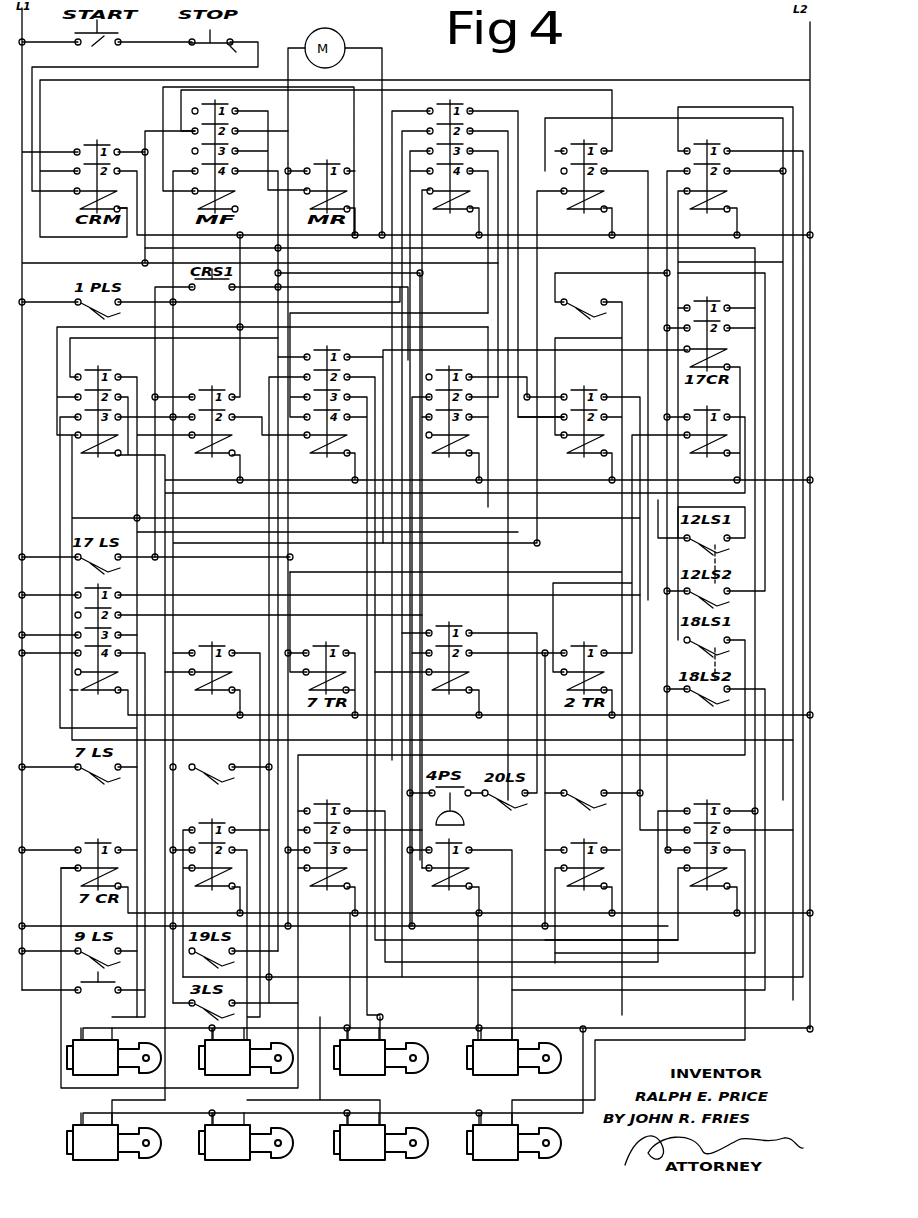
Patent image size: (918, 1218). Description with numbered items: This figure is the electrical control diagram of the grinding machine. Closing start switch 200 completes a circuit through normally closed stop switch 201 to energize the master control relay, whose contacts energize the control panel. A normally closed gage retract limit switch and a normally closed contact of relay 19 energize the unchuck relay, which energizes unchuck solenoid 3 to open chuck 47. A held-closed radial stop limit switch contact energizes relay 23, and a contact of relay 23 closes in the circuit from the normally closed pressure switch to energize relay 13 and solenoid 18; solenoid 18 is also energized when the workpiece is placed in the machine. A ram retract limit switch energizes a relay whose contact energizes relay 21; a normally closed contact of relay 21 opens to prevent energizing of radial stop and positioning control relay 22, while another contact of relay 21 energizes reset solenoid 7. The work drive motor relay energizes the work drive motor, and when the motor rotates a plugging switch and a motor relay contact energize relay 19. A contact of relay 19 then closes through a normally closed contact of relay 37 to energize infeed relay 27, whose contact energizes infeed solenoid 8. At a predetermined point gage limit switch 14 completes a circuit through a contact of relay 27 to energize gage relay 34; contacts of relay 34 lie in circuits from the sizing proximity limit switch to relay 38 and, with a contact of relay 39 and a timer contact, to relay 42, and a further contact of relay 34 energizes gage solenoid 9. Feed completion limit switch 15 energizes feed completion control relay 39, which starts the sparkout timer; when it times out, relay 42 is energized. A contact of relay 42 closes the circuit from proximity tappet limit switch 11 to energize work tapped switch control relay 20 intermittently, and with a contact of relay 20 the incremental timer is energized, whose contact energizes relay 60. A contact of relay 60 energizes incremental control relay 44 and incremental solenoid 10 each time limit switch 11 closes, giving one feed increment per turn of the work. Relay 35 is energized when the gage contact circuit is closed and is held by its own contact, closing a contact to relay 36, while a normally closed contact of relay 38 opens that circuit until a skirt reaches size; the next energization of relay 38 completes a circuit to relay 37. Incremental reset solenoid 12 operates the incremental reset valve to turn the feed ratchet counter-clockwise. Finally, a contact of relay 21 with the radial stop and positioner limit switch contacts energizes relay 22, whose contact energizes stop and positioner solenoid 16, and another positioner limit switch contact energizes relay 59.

The start switch 200 is at (98, 42).
The stop switch 201 is at (212, 47).
The relay 19 is at (450, 163).
The work tapped switch control relay 20 is at (584, 183).
The relay 23 is at (707, 183).
The relay 35 is at (98, 419).
The relay 36 is at (212, 429).
The relay 37 is at (327, 409).
The relay 38 is at (449, 419).
The feed completion control relay 39 is at (584, 429).
The relay 60 is at (707, 439).
The gage relay 34 is at (98, 647).
The incremental control relay 44 is at (211, 676).
The relay 42 is at (448, 666).
The relay 13 is at (212, 862).
The relay 21 is at (327, 853).
The radial stop and positioning control relay 22 is at (449, 872).
The relay 59 is at (584, 872).
The infeed relay 27 is at (707, 853).
The feed completion limit switch 15 is at (583, 299).
The proximity tappet limit switch 11 is at (212, 764).
The gage limit switch 14 is at (584, 790).
The chuck 47 is at (99, 978).
The unchuck solenoid 3 is at (114, 1051).
The solenoid 18 is at (246, 1051).
The reset solenoid 7 is at (381, 1051).
The stop and positioner solenoid 16 is at (514, 1051).
The gage solenoid 9 is at (114, 1136).
The incremental reset solenoid 12 is at (246, 1136).
The incremental solenoid 10 is at (381, 1136).
The infeed solenoid 8 is at (514, 1136).